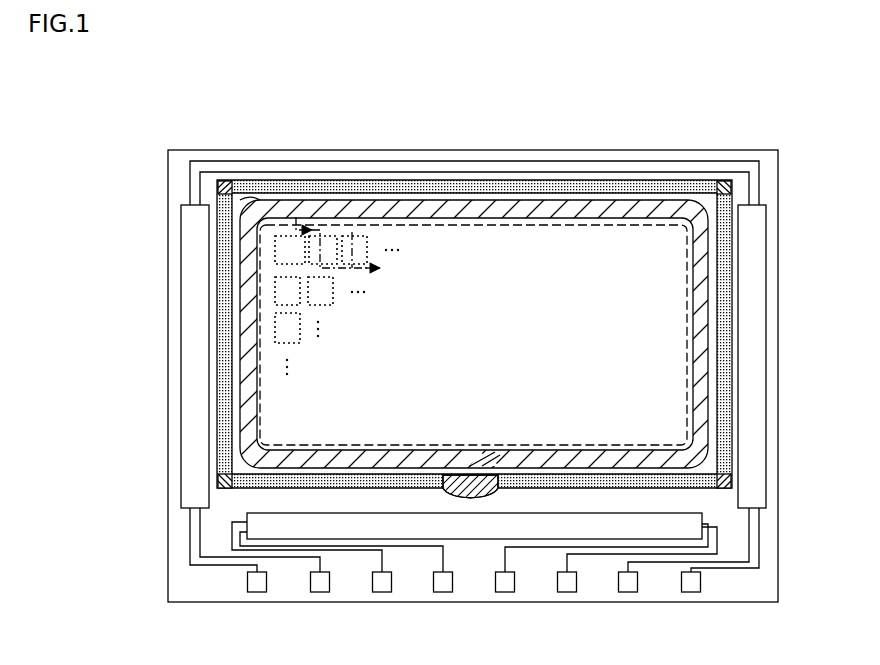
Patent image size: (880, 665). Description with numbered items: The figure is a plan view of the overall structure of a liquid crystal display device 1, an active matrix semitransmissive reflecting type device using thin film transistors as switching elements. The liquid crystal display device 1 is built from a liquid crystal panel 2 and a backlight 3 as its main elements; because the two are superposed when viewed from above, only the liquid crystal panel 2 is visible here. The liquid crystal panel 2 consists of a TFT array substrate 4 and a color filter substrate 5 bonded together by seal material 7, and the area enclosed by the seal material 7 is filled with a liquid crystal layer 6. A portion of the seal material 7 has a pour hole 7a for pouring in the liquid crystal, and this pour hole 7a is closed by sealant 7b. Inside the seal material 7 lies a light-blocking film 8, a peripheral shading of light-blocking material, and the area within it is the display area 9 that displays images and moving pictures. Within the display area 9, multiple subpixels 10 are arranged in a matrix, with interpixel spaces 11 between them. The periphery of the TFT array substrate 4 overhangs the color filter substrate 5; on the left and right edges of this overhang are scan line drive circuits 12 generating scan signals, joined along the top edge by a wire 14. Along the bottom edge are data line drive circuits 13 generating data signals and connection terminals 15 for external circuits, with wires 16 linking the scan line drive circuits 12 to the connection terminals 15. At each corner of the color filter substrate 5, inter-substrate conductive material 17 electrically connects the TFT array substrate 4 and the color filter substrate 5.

The liquid crystal display device 1 is at (548, 95).
The liquid crystal panel 2 is at (630, 145).
The backlight 3 is at (776, 560).
The TFT array substrate 4 is at (778, 165).
The color filter substrate 5 is at (687, 180).
The liquid crystal layer 6 is at (457, 345).
The seal material 7 is at (727, 347).
The pour hole 7a is at (493, 460).
The sealant 7b is at (478, 500).
The light-blocking film 8 is at (703, 397).
The display area 9 is at (259, 375).
The subpixels 10 is at (297, 290).
The interpixel spaces 11 is at (243, 200).
The scan line drive circuits 12 is at (185, 291).
The data line drive circuits 13 is at (667, 525).
The wire 14 is at (430, 168).
The connection terminals 15 is at (382, 588).
The wires 16 is at (213, 567).
The inter-substrate conductive material 17 is at (728, 180).